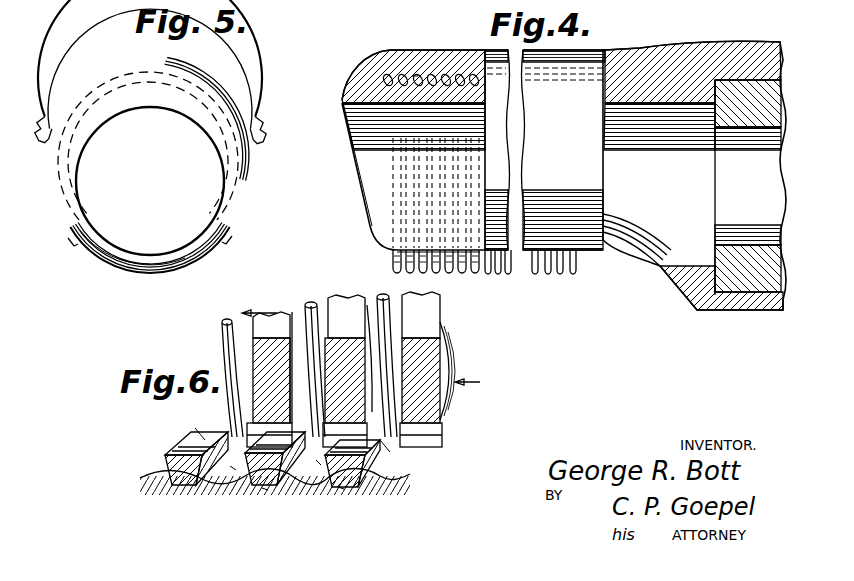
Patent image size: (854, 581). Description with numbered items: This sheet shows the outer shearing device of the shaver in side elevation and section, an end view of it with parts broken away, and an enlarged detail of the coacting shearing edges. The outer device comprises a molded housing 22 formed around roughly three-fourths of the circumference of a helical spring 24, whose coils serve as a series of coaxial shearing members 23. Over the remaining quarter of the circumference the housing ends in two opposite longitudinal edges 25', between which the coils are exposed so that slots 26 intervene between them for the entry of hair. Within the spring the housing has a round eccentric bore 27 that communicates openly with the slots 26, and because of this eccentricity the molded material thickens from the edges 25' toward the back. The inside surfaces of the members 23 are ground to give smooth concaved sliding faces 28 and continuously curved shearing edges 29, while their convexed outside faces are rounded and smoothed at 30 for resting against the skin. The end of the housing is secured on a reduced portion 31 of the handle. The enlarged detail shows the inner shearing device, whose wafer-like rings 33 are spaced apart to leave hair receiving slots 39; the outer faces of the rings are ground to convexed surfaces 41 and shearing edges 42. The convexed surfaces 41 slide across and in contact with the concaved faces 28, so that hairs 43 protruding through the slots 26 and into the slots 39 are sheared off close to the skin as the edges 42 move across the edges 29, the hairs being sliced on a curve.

In FIG. 5, the housing 22 is at (222, 90).
In FIG. 4, the housing 22 is at (465, 66).
In FIG. 5, the shearing members 23 is at (151, 274).
In FIG. 4, the shearing members 23 is at (500, 293).
In FIG. 6, the shearing members 23 is at (187, 478).
In FIG. 5, the helical spring 24 is at (115, 257).
In FIG. 4, the helical spring 24 is at (412, 74).
In FIG. 5, the longitudinal edges 25' is at (164, 261).
In FIG. 6, the slots 26 is at (233, 470).
In FIG. 5, the eccentric bore 27 is at (197, 134).
In FIG. 4, the eccentric bore 27 is at (368, 115).
In FIG. 6, the concaved sliding faces 28 is at (200, 443).
In FIG. 5, the shearing edges 29 is at (143, 266).
In FIG. 4, the shearing edges 29 is at (398, 264).
In FIG. 6, the shearing edges 29 is at (197, 428).
In FIG. 6, the rounded outside faces 30 is at (267, 490).
In FIG. 4, the reduced portion 31 is at (768, 116).
In FIG. 6, the rings 33 is at (346, 367).
In FIG. 6, the hair receiving slots 39 is at (325, 306).
In FIG. 6, the convexed surfaces 41 is at (449, 432).
In FIG. 6, the shearing edges 42 is at (444, 408).
In FIG. 6, the hairs 43 is at (228, 338).